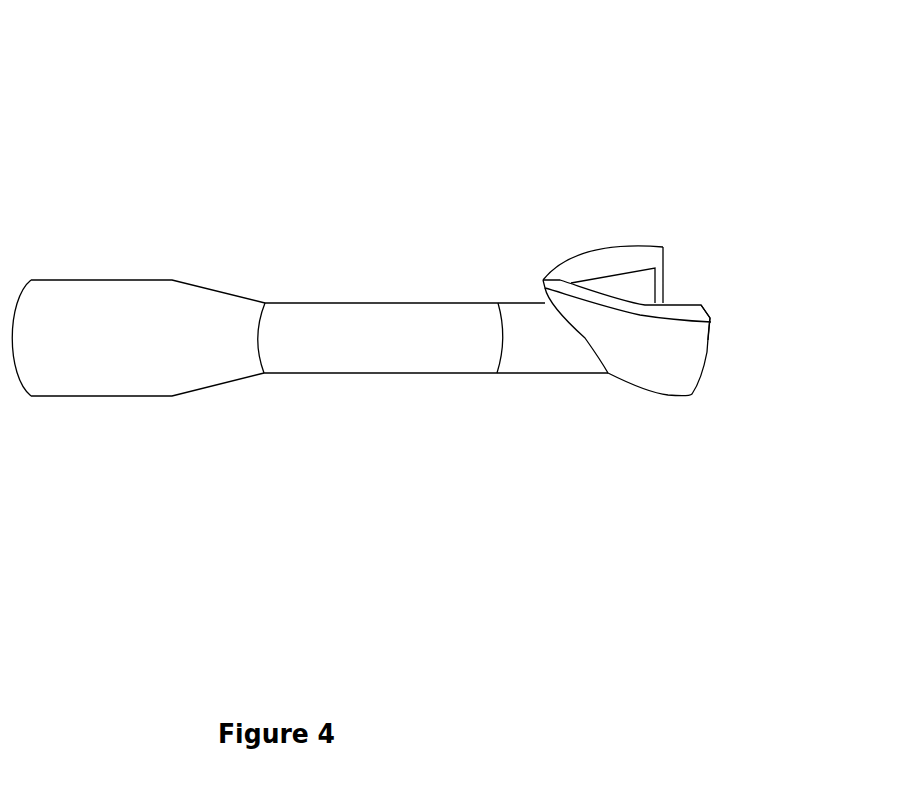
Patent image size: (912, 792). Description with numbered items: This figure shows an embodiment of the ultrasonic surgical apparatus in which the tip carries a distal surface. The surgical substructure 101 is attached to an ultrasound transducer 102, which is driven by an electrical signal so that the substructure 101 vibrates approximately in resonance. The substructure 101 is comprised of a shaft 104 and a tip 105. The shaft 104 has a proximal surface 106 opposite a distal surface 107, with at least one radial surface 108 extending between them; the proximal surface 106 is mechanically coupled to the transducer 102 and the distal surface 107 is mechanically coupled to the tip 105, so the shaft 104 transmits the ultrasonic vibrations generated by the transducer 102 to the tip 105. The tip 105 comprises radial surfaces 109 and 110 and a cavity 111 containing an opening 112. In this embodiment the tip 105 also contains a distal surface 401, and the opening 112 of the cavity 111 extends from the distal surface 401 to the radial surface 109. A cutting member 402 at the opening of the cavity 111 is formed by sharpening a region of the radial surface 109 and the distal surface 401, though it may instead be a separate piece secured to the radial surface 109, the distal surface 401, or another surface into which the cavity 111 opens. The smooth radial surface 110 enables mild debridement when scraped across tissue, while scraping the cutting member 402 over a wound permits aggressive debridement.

The surgical substructure 101 is at (262, 612).
The ultrasound transducer 102 is at (123, 330).
The shaft 104 is at (262, 483).
The tip 105 is at (496, 510).
The proximal surface 106 is at (261, 338).
The distal surface 107 is at (497, 335).
The radial surface 108 is at (356, 305).
The radial surface 109 is at (644, 308).
The radial surface 110 is at (647, 348).
The cavity 111 is at (640, 286).
The opening 112 is at (816, 372).
The distal surface 401 is at (707, 353).
The cutting member 402 is at (628, 261).